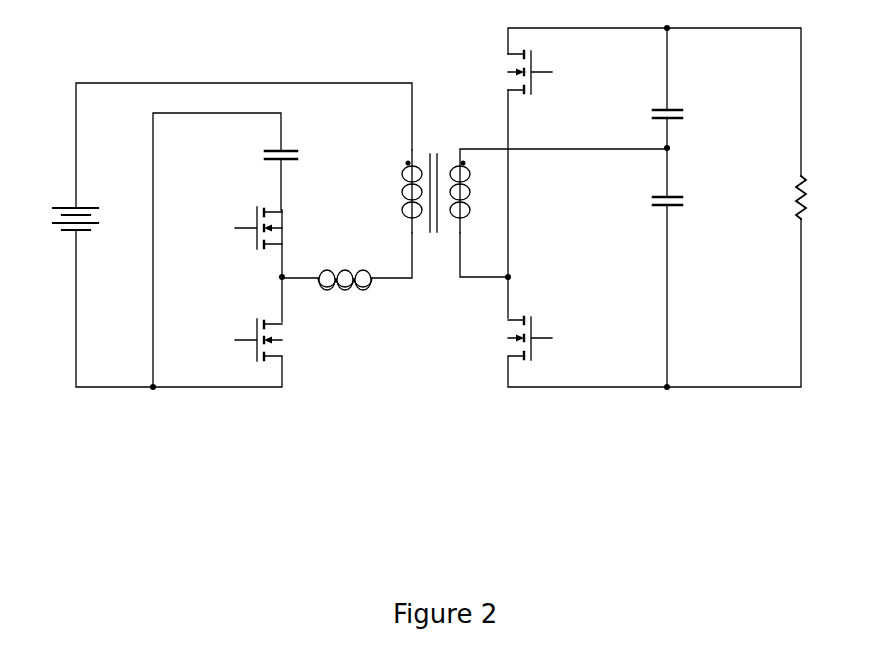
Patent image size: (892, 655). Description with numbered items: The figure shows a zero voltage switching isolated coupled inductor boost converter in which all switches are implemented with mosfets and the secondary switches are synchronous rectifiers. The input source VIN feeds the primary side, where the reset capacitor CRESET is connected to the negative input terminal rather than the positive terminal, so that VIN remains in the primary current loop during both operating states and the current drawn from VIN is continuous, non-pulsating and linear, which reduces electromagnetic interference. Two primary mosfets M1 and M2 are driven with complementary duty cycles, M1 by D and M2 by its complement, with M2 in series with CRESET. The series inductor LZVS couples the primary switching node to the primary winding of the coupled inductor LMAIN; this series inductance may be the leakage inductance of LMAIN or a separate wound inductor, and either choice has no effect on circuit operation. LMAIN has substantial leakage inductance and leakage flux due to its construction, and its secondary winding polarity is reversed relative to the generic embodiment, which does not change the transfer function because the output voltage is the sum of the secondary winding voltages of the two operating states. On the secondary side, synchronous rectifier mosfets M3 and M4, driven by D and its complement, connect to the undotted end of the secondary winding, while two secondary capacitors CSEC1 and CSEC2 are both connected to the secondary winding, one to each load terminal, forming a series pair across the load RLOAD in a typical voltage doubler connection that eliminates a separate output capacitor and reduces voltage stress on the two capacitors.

The input source VIN is at (52, 223).
The reset capacitor CRESET is at (248, 153).
The primary mosfet switch M1 is at (263, 340).
The primary mosfet switch M2 is at (245, 228).
The series inductor LZVS is at (347, 280).
The coupled inductor LMAIN is at (436, 177).
The synchronous rectifier mosfet M3 is at (520, 338).
The synchronous rectifier mosfet M4 is at (540, 72).
The secondary capacitor CSEC1 is at (692, 199).
The secondary capacitor CSEC2 is at (692, 114).
The load RLOAD is at (834, 199).